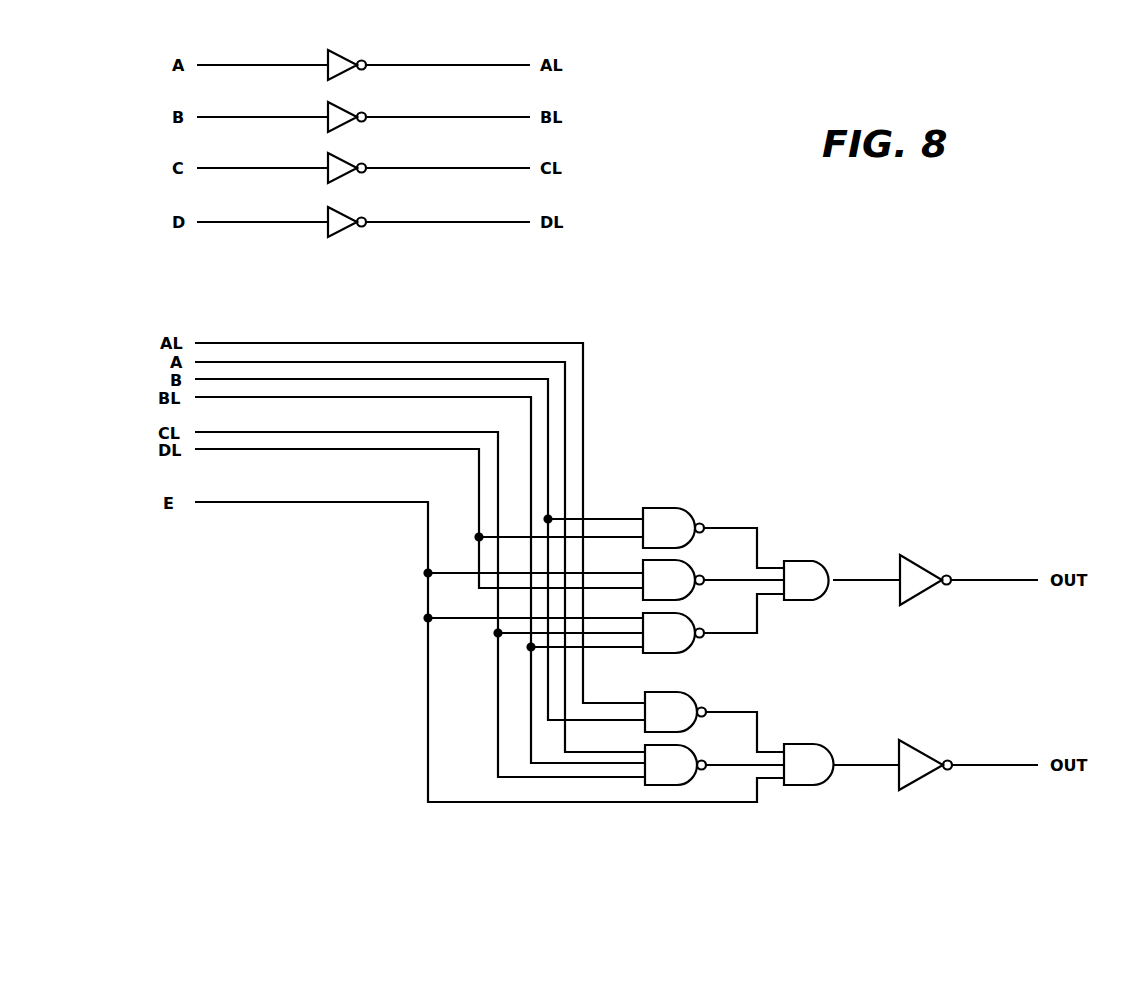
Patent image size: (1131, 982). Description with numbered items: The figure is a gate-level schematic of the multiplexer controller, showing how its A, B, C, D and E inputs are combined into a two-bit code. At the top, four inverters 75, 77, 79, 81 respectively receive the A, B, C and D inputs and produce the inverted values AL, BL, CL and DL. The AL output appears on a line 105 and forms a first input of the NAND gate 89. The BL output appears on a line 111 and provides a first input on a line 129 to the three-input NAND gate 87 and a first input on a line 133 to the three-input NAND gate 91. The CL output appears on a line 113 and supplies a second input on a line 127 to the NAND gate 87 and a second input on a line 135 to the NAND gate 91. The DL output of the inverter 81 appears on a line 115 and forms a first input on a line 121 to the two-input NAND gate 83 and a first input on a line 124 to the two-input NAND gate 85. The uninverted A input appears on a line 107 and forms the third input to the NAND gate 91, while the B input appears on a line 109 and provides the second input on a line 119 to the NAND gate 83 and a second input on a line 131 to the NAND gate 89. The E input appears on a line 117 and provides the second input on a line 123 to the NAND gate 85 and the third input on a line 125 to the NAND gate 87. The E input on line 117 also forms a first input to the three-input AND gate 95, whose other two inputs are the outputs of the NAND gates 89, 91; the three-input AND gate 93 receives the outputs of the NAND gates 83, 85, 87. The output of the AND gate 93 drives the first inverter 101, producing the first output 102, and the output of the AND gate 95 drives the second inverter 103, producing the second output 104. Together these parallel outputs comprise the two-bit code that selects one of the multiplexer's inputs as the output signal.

The inverter 75 is at (352, 57).
The inverter 77 is at (357, 108).
The inverter 79 is at (356, 160).
The inverter 81 is at (356, 214).
The line 105 is at (434, 64).
The line 107 is at (372, 362).
The line 109 is at (432, 379).
The line 111 is at (470, 116).
The line 113 is at (462, 167).
The line 115 is at (462, 220).
The line 117 is at (373, 503).
The line 119 is at (610, 519).
The line 121 is at (632, 537).
The line 123 is at (453, 572).
The line 124 is at (592, 589).
The line 125 is at (453, 619).
The line 127 is at (610, 648).
The line 129 is at (640, 652).
The line 131 is at (628, 721).
The line 133 is at (553, 802).
The line 135 is at (485, 777).
The two-input NAND gate 83 is at (682, 508).
The two-input NAND gate 85 is at (698, 567).
The three-input NAND gate 87 is at (698, 621).
The NAND gate 89 is at (698, 695).
The three-input NAND gate 91 is at (700, 752).
The second three-input AND gate 93 is at (808, 560).
The first three-input AND gate 95 is at (804, 743).
The first inverter 101 is at (916, 553).
The output line OUT 102 is at (986, 578).
The second inverter 103 is at (918, 740).
The output line OUT 104 is at (991, 764).